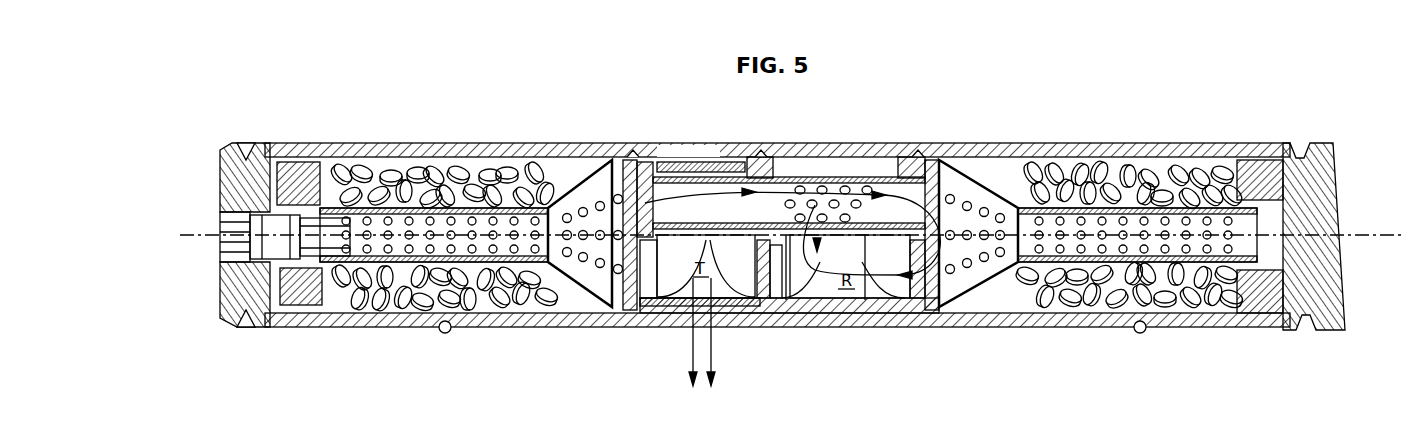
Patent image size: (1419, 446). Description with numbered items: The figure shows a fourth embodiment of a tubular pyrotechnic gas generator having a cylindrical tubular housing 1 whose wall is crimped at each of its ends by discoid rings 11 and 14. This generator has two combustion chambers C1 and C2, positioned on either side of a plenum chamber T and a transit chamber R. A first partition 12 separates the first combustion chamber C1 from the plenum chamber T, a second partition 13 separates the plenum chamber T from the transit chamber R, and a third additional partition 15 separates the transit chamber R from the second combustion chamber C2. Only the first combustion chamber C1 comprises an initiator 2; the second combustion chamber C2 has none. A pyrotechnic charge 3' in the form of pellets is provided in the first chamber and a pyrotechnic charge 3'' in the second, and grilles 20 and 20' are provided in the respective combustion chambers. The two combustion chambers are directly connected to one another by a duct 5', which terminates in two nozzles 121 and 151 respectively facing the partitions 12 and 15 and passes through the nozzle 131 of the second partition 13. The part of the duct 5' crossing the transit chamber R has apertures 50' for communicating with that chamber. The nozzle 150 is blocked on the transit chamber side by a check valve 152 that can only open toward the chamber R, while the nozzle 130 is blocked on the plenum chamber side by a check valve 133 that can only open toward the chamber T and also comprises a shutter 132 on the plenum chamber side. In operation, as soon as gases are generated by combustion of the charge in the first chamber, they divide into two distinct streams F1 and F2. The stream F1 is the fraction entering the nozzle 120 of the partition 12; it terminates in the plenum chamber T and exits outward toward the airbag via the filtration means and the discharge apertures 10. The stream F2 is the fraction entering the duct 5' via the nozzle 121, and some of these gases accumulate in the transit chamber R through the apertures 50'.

The tubular housing 1 is at (892, 93).
The initiator 2 is at (333, 226).
The pyrotechnic charge 3' is at (442, 157).
The pyrotechnic charge 3'' is at (1133, 158).
The duct 5' is at (820, 300).
The discharge apertures 10 is at (694, 153).
The discoid ring 11 is at (243, 288).
The partition 12 is at (630, 200).
The partition 13 is at (767, 170).
The discoid ring 14 is at (1332, 270).
The partition 15 is at (914, 165).
The grille 20 is at (438, 183).
The grille 20' is at (1137, 183).
The apertures 50' is at (896, 314).
The nozzle 120 is at (620, 300).
The nozzle 121 is at (602, 208).
The nozzle 130 is at (799, 318).
The nozzle 131 is at (800, 162).
The shutter 132 is at (813, 318).
The check valve 133 is at (752, 305).
The nozzle 150 is at (978, 320).
The nozzle 151 is at (972, 180).
The check valve 152 is at (915, 320).
The first combustion chamber C1 is at (400, 300).
The second combustion chamber C2 is at (1170, 303).
The gas stream F1 is at (679, 332).
The gas stream F2 is at (722, 332).